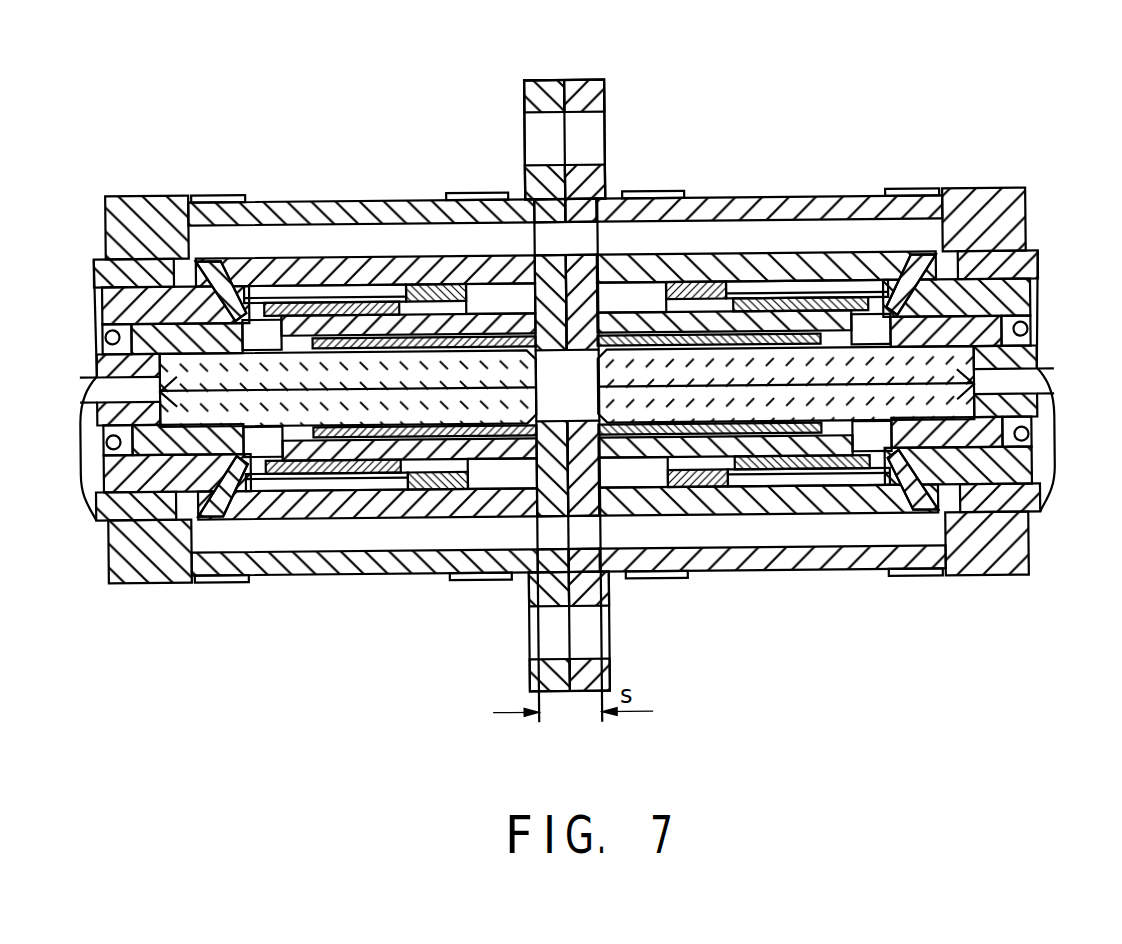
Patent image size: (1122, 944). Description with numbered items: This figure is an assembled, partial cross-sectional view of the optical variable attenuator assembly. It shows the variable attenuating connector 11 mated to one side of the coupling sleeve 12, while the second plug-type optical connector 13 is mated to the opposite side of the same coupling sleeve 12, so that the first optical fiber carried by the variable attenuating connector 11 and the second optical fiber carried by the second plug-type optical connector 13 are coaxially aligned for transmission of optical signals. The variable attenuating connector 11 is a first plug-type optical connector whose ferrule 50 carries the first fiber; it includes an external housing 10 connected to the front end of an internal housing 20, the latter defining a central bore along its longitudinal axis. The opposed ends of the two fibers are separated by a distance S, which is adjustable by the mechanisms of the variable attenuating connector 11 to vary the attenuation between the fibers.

The external housing 10 is at (173, 523).
The variable attenuating connector 11 is at (383, 690).
The coupling sleeve 12 is at (588, 80).
The second plug-type optical connector 13 is at (1000, 673).
The internal housing 20 is at (215, 492).
The ferrule 50 is at (432, 408).